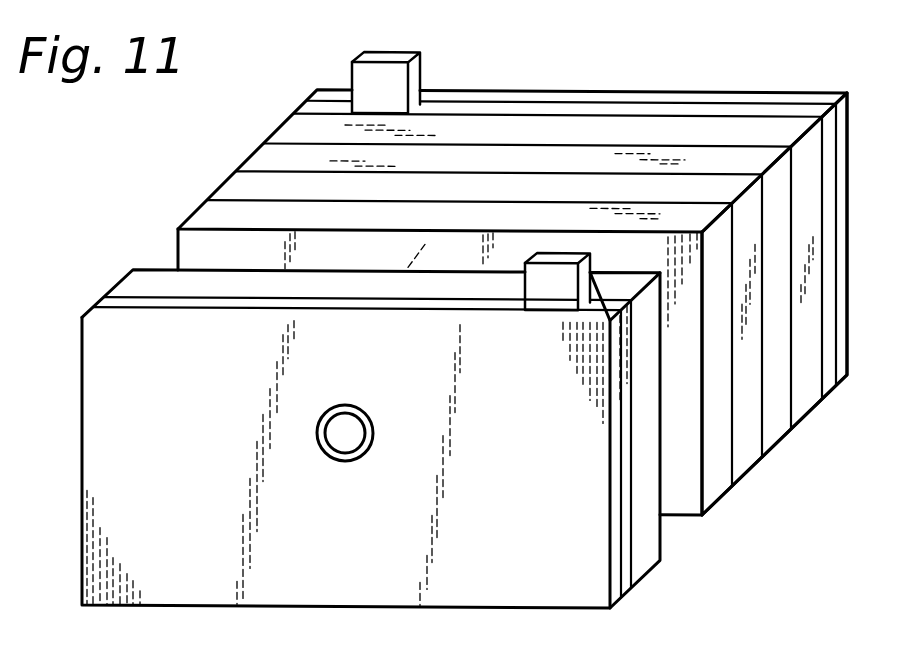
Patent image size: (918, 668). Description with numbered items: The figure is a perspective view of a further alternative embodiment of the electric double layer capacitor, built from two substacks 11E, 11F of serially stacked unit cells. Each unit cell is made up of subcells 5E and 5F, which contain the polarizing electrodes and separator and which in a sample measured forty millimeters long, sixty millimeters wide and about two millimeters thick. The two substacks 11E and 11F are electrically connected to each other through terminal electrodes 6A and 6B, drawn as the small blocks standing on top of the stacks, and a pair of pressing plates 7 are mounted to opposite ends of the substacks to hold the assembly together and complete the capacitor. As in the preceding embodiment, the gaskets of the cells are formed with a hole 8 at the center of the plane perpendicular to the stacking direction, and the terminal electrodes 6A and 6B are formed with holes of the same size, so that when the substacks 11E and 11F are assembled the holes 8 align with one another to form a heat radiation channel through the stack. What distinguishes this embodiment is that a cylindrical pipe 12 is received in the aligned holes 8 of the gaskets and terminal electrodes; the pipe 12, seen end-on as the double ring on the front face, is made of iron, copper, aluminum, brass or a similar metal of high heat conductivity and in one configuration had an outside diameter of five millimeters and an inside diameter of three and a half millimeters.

The substack 11E is at (282, 95).
The substack 11F is at (754, 488).
The subcell 5E is at (300, 127).
The subcell 5F is at (650, 428).
The terminal electrode 6A is at (106, 298).
The terminal electrode 6B is at (482, 109).
The pressing plate 7 is at (628, 91).
The hole 8 is at (340, 436).
The cylindrical pipe 12 is at (363, 448).